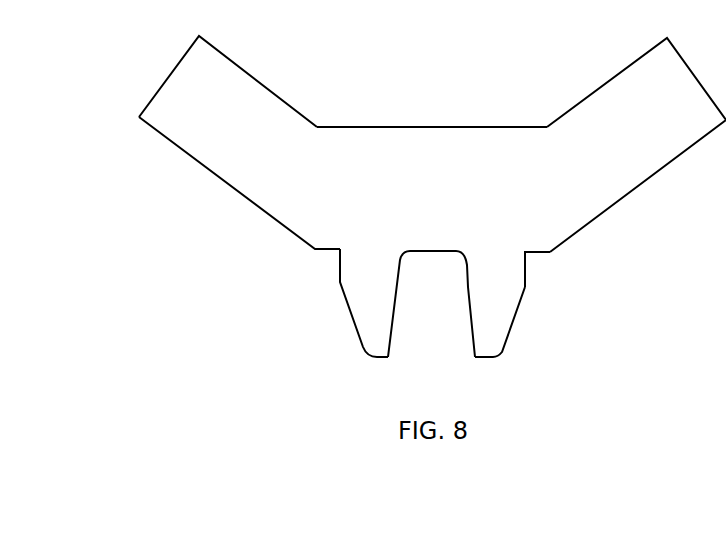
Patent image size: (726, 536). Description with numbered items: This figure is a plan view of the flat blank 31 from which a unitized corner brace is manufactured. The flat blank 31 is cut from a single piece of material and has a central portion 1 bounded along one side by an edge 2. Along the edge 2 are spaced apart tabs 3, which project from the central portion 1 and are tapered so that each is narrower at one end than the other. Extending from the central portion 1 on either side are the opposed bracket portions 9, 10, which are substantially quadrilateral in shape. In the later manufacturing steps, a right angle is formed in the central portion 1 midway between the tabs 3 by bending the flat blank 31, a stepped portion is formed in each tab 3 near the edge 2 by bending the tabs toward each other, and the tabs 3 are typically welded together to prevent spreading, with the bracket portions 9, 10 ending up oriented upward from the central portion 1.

The central portion 1 is at (443, 153).
The edge 2 is at (542, 253).
The tabs 3 is at (350, 318).
The bracket portion 9 is at (238, 97).
The bracket portion 10 is at (627, 113).
The flat blank 31 is at (432, 199).